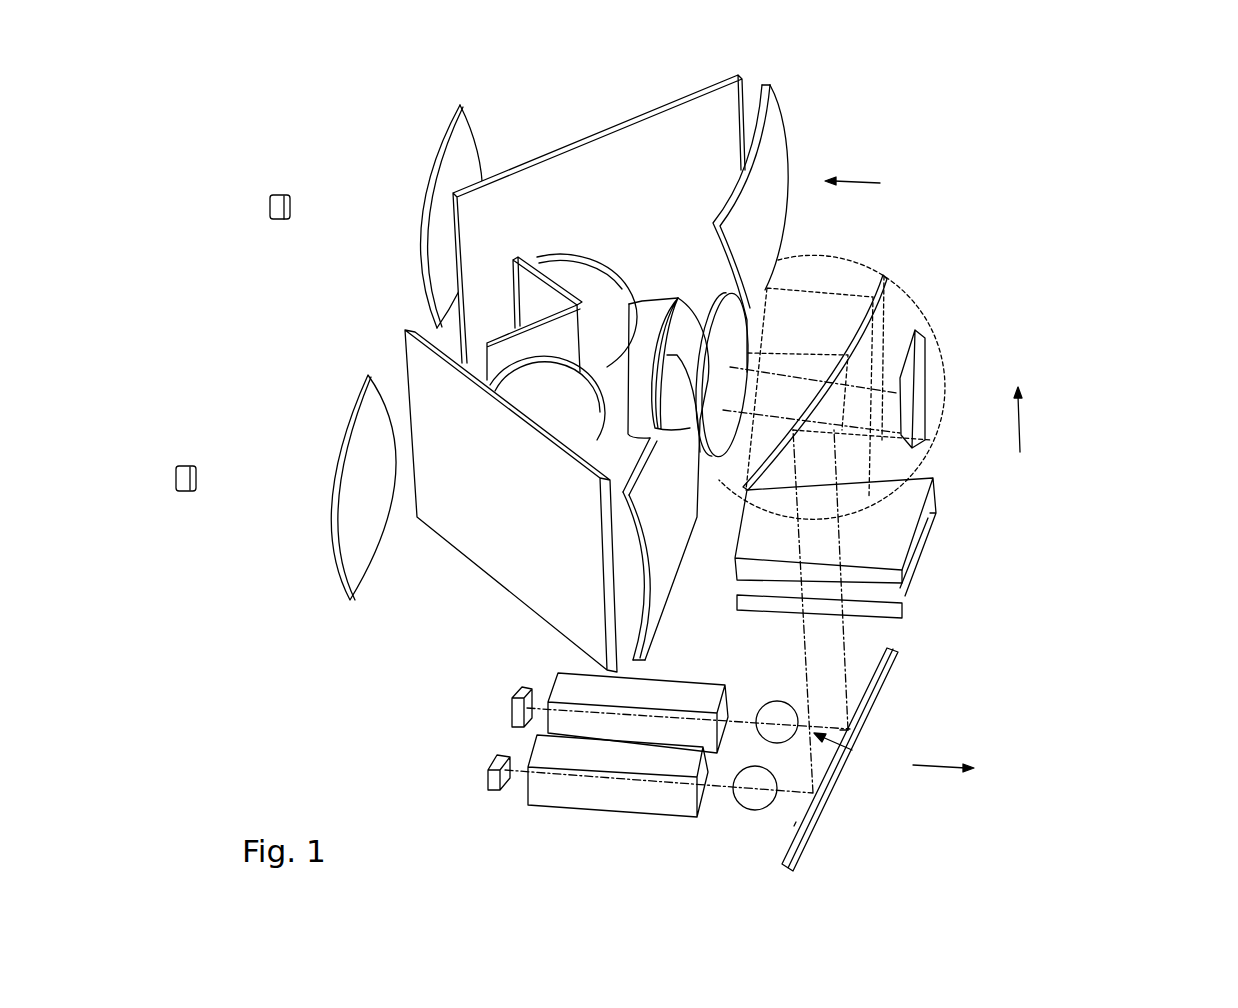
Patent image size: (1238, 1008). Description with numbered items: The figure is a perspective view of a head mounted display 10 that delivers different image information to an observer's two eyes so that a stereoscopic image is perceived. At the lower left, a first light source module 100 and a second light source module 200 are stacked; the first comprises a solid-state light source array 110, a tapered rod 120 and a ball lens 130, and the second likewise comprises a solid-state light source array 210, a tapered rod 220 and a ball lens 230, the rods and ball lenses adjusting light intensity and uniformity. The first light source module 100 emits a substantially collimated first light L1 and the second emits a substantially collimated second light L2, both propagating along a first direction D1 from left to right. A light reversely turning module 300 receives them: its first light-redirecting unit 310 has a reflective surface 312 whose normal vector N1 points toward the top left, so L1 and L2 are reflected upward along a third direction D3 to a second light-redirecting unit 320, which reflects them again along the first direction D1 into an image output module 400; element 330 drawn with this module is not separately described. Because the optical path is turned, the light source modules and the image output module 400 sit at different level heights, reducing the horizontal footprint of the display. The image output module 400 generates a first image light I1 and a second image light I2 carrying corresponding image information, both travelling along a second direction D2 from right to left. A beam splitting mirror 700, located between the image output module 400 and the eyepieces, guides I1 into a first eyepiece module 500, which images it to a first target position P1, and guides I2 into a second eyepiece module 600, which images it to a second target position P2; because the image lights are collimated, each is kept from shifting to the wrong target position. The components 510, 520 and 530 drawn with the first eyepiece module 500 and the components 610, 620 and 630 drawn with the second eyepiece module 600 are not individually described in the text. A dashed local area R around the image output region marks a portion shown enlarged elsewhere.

The head mounted display 10 is at (128, 106).
The first light source module 100 is at (1128, 352).
The solid-state light source array 110 is at (495, 787).
The tapered rod 120 is at (610, 797).
The ball lens 130 is at (743, 797).
The second light source module 200 is at (1128, 453).
The solid-state light source array 210 is at (523, 688).
The tapered rod 220 is at (687, 687).
The ball lens 230 is at (772, 707).
The light reversely turning module 300 is at (1128, 553).
The first light-redirecting unit 310 is at (843, 790).
The reflective surface 312 is at (795, 822).
The second light-redirecting unit 320 is at (885, 487).
The light valve prism assembly 330 is at (793, 310).
The image output module 400 is at (918, 372).
The first eyepiece module 500 is at (1128, 150).
The first reflector 510 is at (557, 150).
The first lens element 520 is at (768, 138).
The second lens element 530 is at (442, 128).
The second eyepiece module 600 is at (1128, 250).
The second reflector 610 is at (473, 523).
The third lens element 620 is at (680, 510).
The fourth lens element 630 is at (343, 420).
The beam splitting mirror 700 is at (523, 290).
The first target position P1 is at (282, 195).
The second target position P2 is at (190, 465).
The first image light I1 is at (855, 385).
The second image light I2 is at (810, 378).
The first light L1 is at (805, 633).
The second light L2 is at (845, 650).
The normal vector N1 is at (862, 748).
The local area R is at (935, 313).
The first direction D1 is at (943, 757).
The second direction D2 is at (852, 170).
The third direction D3 is at (1033, 419).